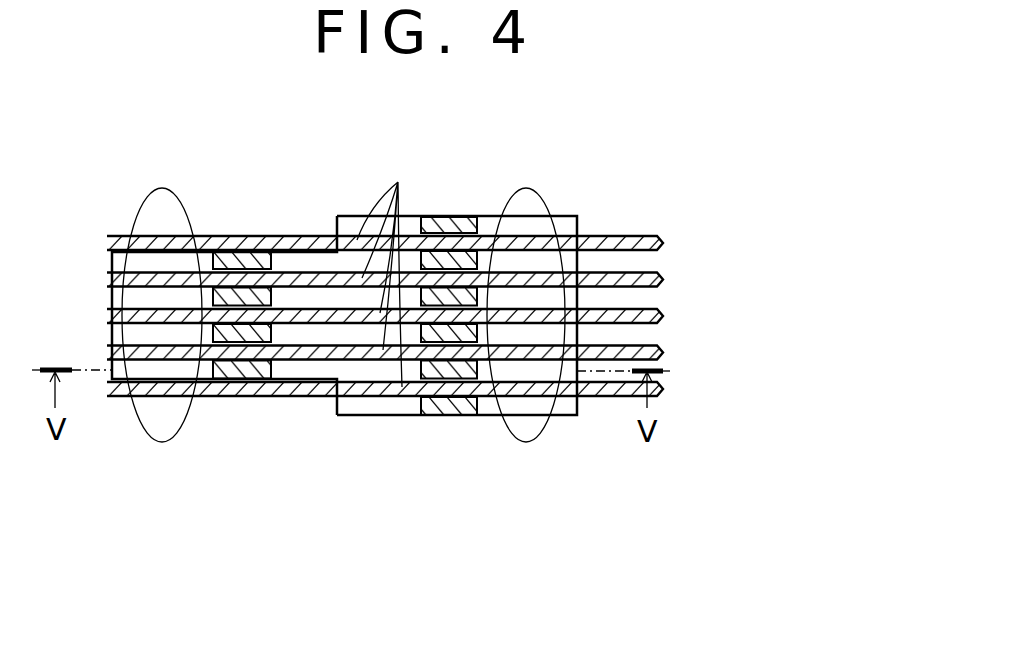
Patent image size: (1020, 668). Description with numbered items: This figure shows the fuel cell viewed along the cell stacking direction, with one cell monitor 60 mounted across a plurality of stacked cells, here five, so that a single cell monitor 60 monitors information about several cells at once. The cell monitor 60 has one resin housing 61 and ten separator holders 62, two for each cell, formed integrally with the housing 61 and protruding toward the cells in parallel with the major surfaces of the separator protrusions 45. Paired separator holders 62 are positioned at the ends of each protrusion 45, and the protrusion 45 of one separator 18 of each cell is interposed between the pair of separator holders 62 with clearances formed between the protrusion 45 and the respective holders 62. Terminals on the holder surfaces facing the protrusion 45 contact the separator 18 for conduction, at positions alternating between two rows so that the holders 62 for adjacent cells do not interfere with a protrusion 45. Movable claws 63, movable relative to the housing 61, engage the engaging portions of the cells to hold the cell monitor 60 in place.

The separator 18 is at (501, 315).
The separator protrusion 45 is at (386, 265).
The cell monitor 60 is at (570, 217).
The resin housing 61 is at (345, 216).
The separator holder 62 is at (250, 374).
The movable claw 63 is at (165, 470).